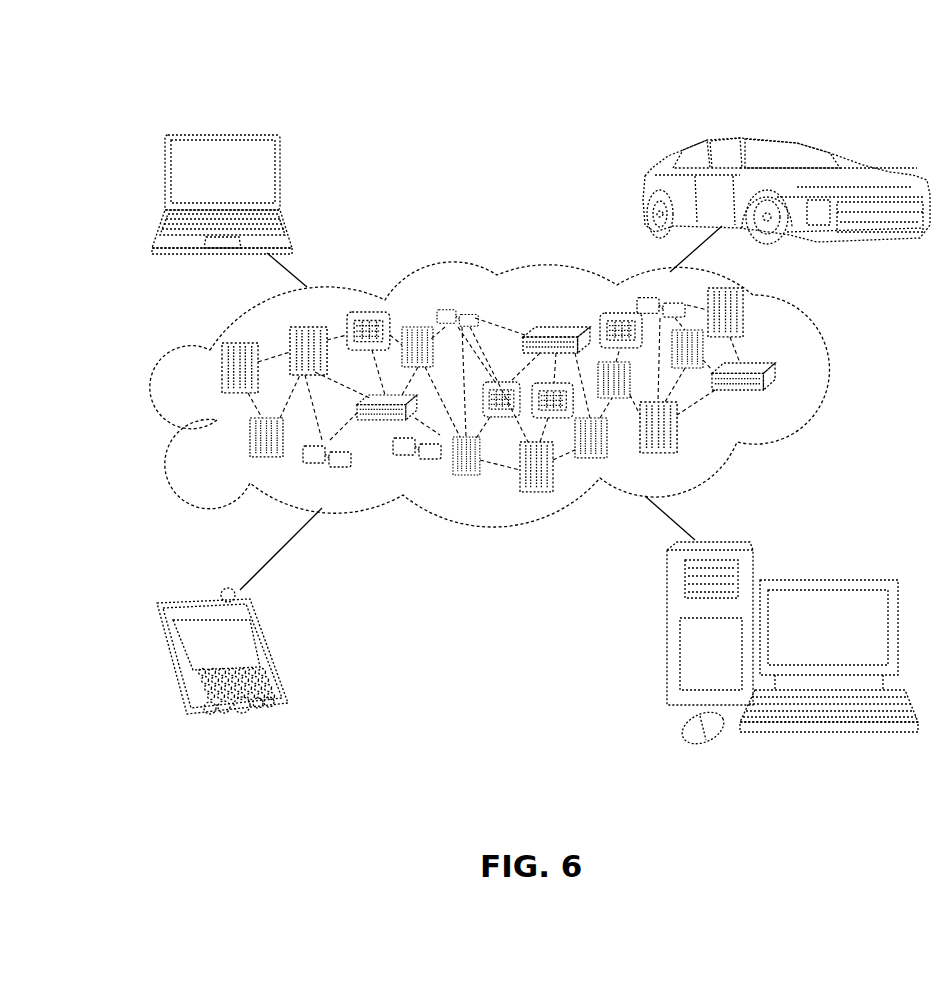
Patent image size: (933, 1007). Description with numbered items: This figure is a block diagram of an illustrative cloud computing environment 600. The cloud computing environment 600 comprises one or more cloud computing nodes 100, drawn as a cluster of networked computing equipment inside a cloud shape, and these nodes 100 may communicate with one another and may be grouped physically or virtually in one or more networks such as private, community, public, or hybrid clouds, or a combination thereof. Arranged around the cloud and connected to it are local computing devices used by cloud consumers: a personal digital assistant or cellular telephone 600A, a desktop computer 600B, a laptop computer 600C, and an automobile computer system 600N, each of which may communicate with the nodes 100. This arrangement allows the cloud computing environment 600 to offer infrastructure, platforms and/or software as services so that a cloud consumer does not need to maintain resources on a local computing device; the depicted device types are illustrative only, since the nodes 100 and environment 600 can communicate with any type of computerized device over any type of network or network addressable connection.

The cloud computing environment 600 is at (103, 56).
The cloud computing nodes 100 is at (790, 403).
The personal digital assistant (PDA) or cellular telephone 600A is at (272, 650).
The desktop computer 600B is at (823, 580).
The laptop computer 600C is at (283, 178).
The automobile computer system 600N is at (645, 193).